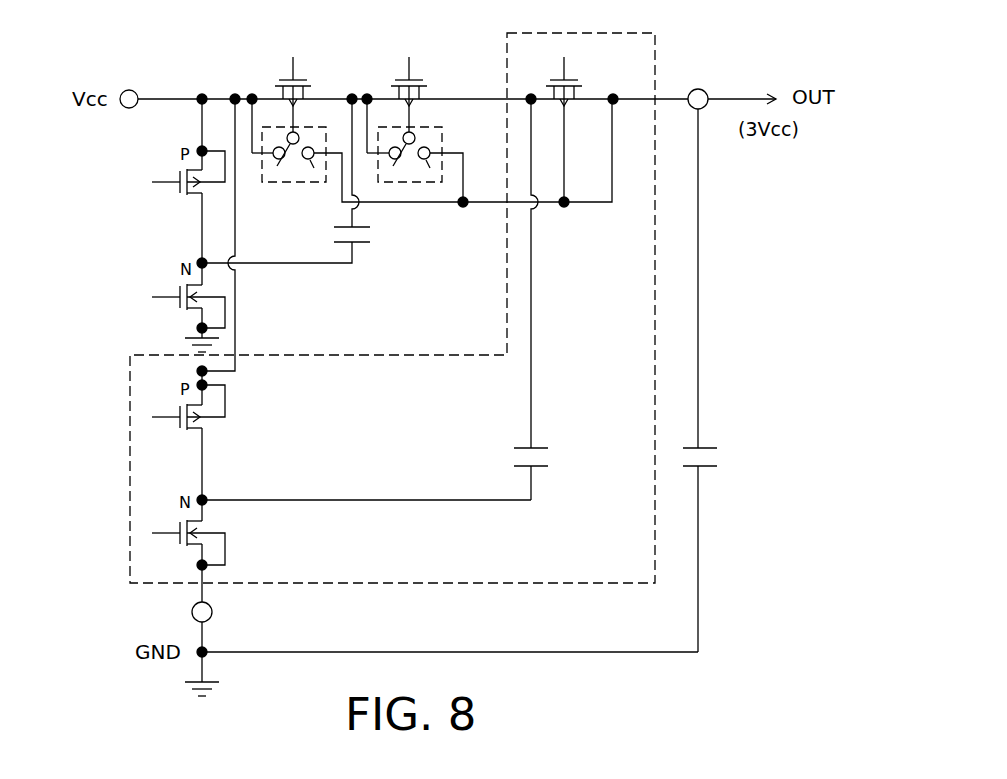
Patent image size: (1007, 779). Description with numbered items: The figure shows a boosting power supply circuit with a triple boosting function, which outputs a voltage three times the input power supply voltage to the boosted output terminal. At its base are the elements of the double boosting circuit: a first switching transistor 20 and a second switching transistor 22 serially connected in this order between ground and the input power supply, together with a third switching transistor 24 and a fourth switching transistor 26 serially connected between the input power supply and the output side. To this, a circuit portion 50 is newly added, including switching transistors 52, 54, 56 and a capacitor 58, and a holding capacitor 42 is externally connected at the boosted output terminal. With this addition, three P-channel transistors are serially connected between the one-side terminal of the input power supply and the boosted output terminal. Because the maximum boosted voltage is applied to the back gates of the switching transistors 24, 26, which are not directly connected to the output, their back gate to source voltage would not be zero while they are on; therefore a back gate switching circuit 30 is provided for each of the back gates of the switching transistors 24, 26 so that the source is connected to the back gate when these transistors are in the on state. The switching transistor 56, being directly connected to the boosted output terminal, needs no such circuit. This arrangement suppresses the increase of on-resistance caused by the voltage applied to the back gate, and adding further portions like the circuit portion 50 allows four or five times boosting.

The first switching transistor 20 is at (162, 292).
The second switching transistor 22 is at (167, 192).
The third switching transistor 24 is at (265, 91).
The fourth switching transistor 26 is at (388, 77).
The back gate switching circuit 30 is at (303, 183).
The holding capacitor 42 is at (725, 455).
The circuit portion 50 is at (655, 42).
The switching transistor 52 is at (232, 552).
The switching transistor 54 is at (378, 233).
The switching transistor 56 is at (580, 73).
The capacitor 58 is at (555, 457).